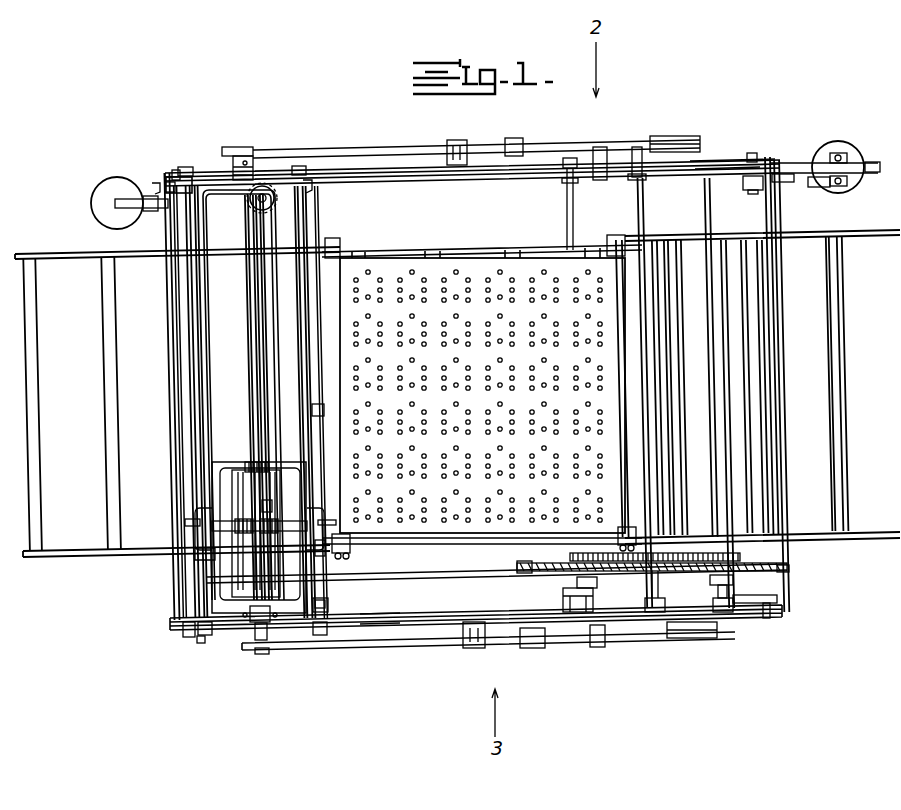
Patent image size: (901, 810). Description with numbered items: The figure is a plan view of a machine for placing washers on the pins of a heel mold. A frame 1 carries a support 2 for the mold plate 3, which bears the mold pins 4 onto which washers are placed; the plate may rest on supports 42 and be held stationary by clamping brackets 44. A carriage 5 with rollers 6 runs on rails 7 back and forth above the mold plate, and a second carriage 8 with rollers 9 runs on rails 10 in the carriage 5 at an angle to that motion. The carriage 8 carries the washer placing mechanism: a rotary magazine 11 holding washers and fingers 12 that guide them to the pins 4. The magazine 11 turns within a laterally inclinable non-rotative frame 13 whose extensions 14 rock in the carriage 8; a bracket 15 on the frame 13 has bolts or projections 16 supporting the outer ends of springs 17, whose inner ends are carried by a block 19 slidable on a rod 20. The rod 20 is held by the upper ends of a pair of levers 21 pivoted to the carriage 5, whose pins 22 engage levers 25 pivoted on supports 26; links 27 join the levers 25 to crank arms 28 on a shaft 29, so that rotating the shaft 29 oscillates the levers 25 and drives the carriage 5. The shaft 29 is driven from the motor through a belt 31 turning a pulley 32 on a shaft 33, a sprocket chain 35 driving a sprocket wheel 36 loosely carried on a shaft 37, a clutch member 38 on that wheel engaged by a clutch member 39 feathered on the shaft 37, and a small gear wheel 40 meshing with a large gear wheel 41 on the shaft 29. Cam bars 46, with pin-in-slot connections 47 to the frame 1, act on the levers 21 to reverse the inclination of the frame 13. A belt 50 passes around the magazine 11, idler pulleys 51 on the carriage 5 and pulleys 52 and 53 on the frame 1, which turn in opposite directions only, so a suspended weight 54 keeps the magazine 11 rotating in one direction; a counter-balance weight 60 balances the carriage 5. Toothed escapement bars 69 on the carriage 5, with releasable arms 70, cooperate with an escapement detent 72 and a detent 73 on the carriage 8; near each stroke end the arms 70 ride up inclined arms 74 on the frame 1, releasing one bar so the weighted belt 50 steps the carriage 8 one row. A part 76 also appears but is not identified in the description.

The frame 1 is at (166, 275).
The support 2 is at (452, 252).
The mold plate 3 is at (395, 262).
The mold pins 4 is at (498, 266).
The carriage 5 is at (208, 188).
The rollers 6 is at (300, 166).
The rails 7 is at (548, 165).
The carriage 8 is at (222, 562).
The rollers 9 is at (198, 465).
The rails 10 is at (200, 360).
The rotary magazine 11 is at (247, 572).
The fingers 12 is at (192, 522).
The laterally inclinable non-rotative frame 13 is at (235, 577).
The extensions 14 is at (318, 412).
The bracket 15 is at (311, 490).
The bolts or projections 16 is at (320, 550).
The springs 17 is at (268, 507).
The block 19 is at (210, 555).
The rod 20 is at (247, 290).
The levers 21 is at (256, 645).
The pins 22 is at (245, 150).
The levers 25 is at (372, 150).
The supports 26 is at (458, 142).
The links 27 is at (602, 147).
The crank arms 28 is at (672, 140).
The shaft 29 is at (642, 216).
The belt 31 is at (460, 572).
The pulley 32 is at (789, 570).
The shaft 33 is at (718, 477).
The sprocket chain 35 is at (642, 576).
The sprocket wheel 36 is at (528, 566).
The shaft 37 is at (568, 212).
The clutch member 38 is at (597, 583).
The clutch member 39 is at (575, 612).
The small gear wheel 40 is at (595, 552).
The large gear wheel 41 is at (680, 553).
The supports 42 is at (750, 377).
The brackets 44 is at (333, 240).
The cam bars 46 is at (705, 164).
The pin-in-slot connections 47 is at (173, 170).
The belt 50 is at (602, 172).
The idler pulleys 51 is at (272, 192).
The pulley 52 is at (866, 174).
The pulley 53 is at (782, 182).
The weight 54 is at (843, 150).
The counter-balance weight 60 is at (95, 203).
The toothed escapement bars 69 is at (312, 358).
The arms 70 is at (182, 197).
The escapement detent 72 is at (320, 604).
The detent 73 is at (255, 575).
The arms 74 is at (168, 182).
The rail flange 76 is at (375, 626).